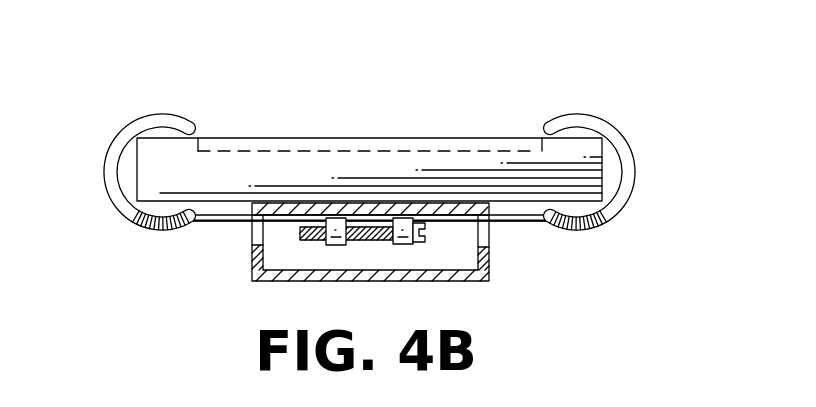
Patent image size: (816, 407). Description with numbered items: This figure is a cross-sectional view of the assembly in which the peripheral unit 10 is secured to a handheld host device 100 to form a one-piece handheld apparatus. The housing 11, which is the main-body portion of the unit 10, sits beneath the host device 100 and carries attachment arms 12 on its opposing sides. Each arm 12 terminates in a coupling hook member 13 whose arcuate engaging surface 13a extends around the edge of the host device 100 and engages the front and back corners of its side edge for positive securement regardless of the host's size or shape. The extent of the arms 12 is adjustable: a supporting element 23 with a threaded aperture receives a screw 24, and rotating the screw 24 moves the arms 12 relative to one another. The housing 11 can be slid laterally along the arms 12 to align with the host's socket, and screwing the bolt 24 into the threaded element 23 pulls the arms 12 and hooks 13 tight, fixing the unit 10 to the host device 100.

The host device 100 is at (413, 137).
The coupling hook member 13 is at (592, 114).
The arcuate engaging surface 13a is at (128, 176).
The unit 10 is at (340, 267).
The housing 11 is at (250, 253).
The attachment arm 12 is at (522, 222).
The supporting element 23 is at (335, 245).
The screw 24 is at (421, 243).